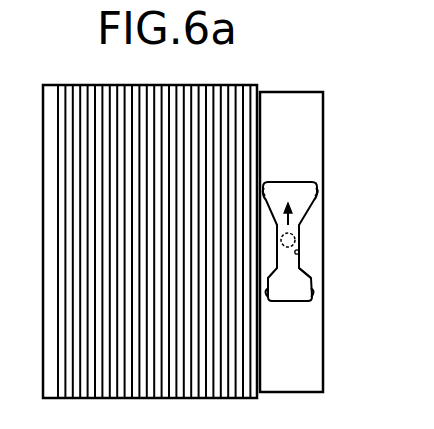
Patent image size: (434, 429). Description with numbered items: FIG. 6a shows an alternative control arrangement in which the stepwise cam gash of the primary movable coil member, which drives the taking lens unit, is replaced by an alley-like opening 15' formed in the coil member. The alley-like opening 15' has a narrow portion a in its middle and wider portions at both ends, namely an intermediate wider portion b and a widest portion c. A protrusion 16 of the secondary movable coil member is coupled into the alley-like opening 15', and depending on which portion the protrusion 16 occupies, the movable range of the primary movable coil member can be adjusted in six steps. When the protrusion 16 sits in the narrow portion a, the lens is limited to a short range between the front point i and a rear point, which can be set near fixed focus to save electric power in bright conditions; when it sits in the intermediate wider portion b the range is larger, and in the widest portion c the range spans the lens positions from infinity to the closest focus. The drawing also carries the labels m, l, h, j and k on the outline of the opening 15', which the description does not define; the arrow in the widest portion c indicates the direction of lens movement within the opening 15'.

The alley-like opening 15' is at (316, 224).
The upper end of contact m is at (266, 188).
The lateral projection l is at (317, 191).
The widest portion c is at (295, 200).
The front point i is at (296, 240).
The protrusion 16 is at (300, 250).
The neck portion h is at (294, 256).
The narrow portion a is at (293, 263).
The lower lateral projection j is at (303, 288).
The lower left projection k is at (270, 297).
The intermediate wider portion b is at (293, 278).